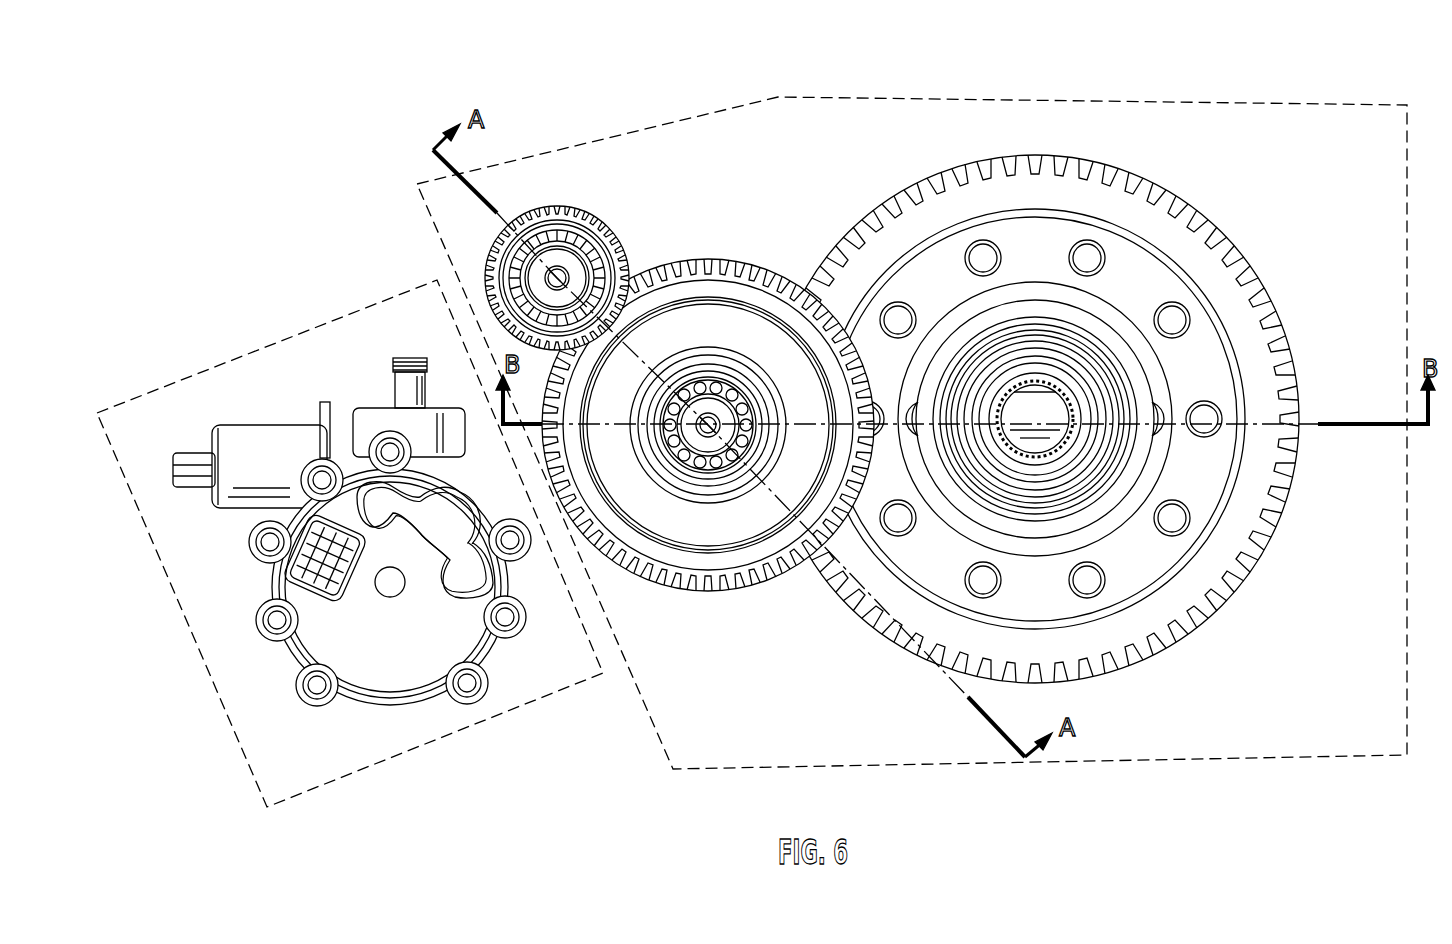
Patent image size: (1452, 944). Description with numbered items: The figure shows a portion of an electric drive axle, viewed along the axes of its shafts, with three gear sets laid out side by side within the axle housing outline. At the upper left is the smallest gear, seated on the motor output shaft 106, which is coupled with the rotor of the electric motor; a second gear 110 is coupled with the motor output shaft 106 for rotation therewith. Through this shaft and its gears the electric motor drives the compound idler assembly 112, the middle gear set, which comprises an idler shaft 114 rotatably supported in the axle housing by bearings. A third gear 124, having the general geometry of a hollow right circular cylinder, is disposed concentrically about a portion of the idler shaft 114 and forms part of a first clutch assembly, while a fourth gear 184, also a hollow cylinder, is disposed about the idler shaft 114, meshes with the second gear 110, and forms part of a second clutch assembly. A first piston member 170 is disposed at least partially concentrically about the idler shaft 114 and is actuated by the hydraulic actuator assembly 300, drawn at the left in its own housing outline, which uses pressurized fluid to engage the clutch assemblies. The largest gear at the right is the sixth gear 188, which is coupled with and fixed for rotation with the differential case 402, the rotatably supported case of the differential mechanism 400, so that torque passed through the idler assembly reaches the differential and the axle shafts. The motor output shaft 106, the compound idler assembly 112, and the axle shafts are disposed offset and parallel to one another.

The motor output shaft 106 is at (572, 268).
The second gear 110 is at (628, 250).
The compound idler assembly 112 is at (585, 191).
The idler shaft 114 is at (708, 410).
The third gear 124 is at (708, 405).
The first piston member 170 is at (688, 527).
The fourth gear 184 is at (727, 594).
The sixth gear 188 is at (1058, 371).
The hydraulic actuator assembly 300 is at (362, 741).
The differential mechanism 400 is at (1073, 371).
The differential case 402 is at (1210, 273).